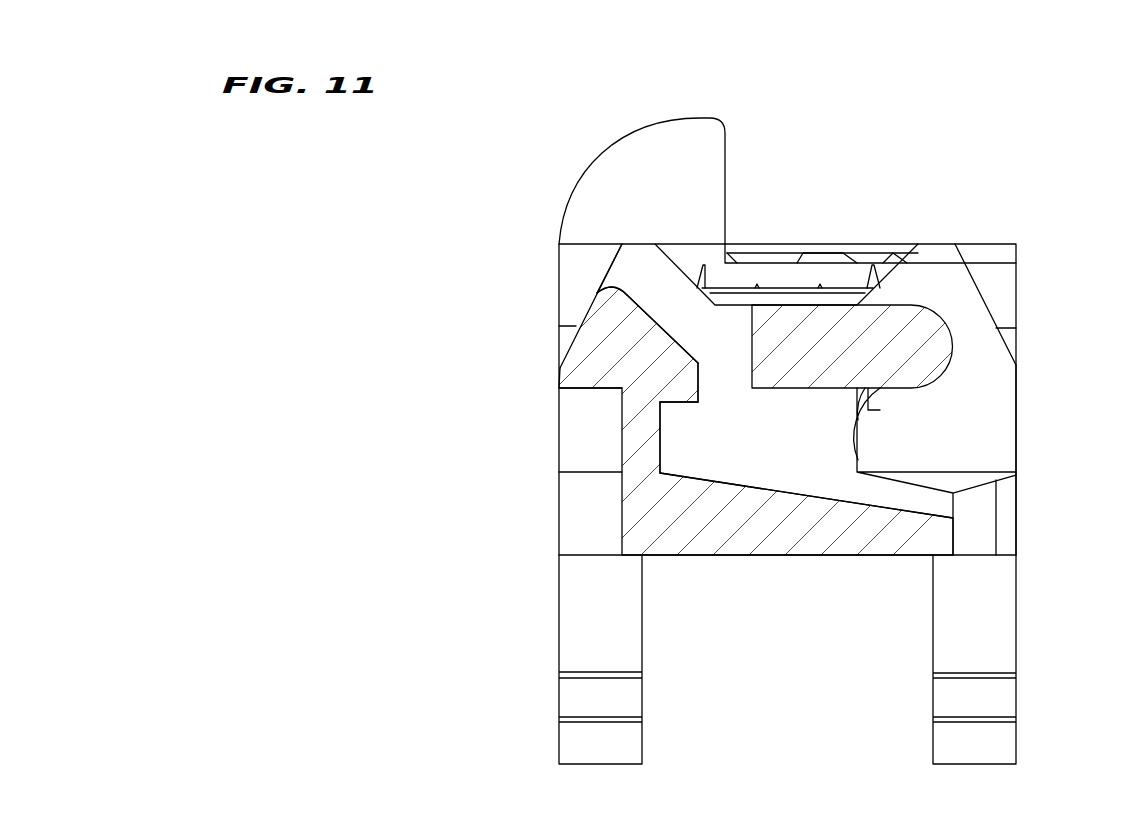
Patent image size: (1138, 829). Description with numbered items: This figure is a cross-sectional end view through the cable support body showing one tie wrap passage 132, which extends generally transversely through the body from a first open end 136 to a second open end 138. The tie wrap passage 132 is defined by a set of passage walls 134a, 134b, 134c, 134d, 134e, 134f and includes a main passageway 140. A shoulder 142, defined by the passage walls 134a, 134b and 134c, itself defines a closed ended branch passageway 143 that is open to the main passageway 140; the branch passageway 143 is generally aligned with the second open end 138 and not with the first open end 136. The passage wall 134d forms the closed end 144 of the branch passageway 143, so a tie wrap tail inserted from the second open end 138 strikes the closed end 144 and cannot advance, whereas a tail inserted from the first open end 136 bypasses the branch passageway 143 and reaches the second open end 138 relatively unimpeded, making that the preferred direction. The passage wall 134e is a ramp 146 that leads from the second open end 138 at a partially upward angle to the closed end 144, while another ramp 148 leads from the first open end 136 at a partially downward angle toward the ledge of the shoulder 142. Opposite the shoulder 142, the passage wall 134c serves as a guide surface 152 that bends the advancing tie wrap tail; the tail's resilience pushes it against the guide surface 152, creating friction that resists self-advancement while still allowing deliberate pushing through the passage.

The tie wrap passage 132 is at (728, 463).
The passage wall 134a is at (650, 318).
The passage wall 134b is at (697, 382).
The passage wall 134c is at (758, 352).
The passage wall 134d is at (653, 463).
The passage wall 134e is at (823, 487).
The passage wall 134f is at (833, 390).
The first open end 136 is at (598, 268).
The second open end 138 is at (1018, 510).
The main passageway 140 is at (658, 278).
The shoulder 142 is at (667, 358).
The closed ended branch passageway 143 is at (680, 457).
The closed end 144 is at (655, 437).
The ramp 146 is at (780, 488).
The ramp 148 is at (673, 340).
The guide surface 152 is at (669, 380).